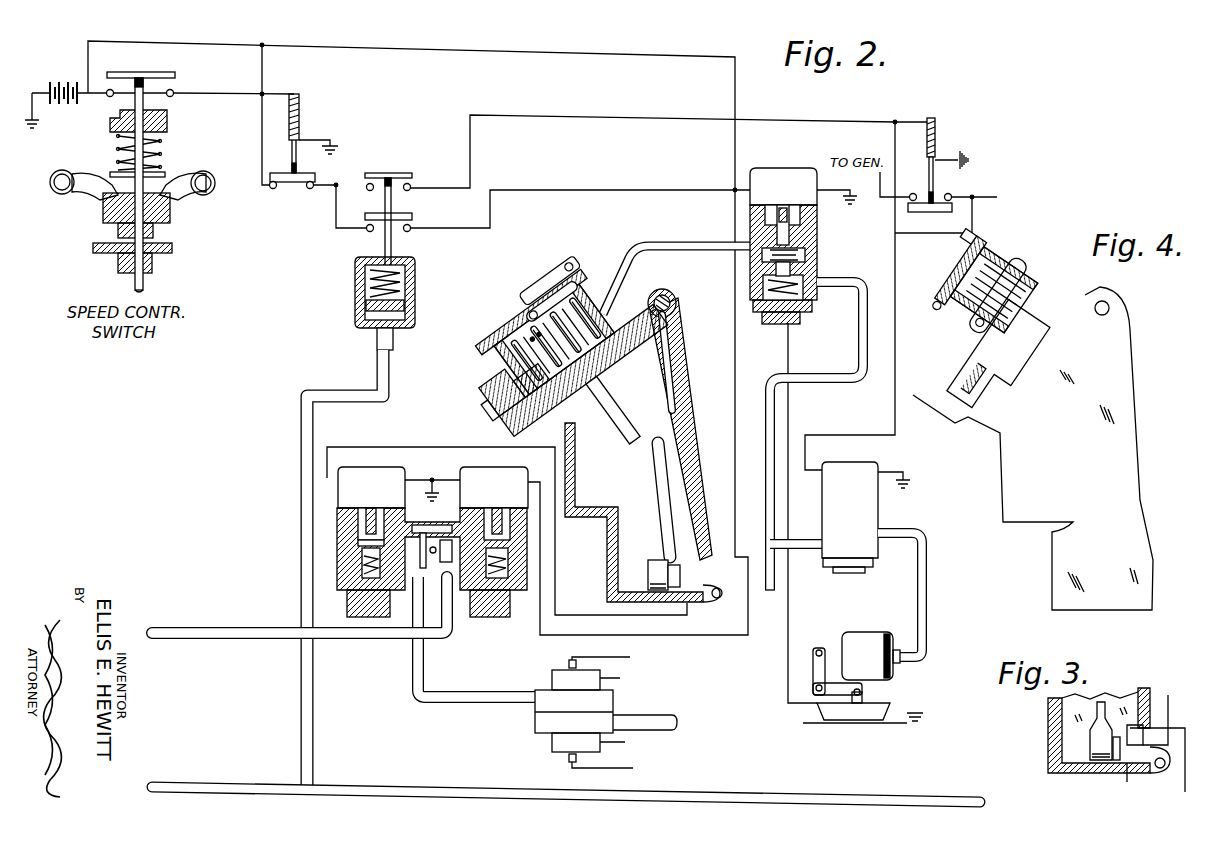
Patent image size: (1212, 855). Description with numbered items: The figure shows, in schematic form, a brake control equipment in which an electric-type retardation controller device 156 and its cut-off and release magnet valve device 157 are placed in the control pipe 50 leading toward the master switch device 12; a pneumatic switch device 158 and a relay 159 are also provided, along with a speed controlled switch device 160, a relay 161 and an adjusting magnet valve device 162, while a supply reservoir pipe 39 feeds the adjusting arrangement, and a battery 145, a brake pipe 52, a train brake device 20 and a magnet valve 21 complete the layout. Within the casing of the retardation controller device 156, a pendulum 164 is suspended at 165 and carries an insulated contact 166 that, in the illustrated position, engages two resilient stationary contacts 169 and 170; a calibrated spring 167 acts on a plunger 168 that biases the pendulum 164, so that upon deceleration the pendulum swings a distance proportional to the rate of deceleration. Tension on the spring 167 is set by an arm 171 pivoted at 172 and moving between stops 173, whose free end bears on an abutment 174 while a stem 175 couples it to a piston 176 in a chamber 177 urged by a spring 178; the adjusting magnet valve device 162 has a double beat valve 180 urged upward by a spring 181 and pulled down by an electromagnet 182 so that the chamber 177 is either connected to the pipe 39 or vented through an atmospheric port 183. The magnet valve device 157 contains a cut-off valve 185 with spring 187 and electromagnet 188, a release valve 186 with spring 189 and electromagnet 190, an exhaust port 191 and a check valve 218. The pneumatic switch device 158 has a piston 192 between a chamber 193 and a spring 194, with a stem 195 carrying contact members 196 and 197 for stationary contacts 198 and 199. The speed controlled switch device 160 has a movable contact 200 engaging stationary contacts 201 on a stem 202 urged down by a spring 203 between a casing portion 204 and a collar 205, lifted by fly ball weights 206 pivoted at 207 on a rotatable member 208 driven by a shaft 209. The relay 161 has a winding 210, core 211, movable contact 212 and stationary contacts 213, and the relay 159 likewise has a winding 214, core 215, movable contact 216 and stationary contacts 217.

In FIG. 2, the master switch device 12 is at (550, 740).
In FIG. 2, the train brake valve 20 is at (872, 722).
In FIG. 2, the train brake magnet valve 21 is at (882, 517).
In FIG. 2, the supply reservoir pipe 39 is at (828, 378).
In FIG. 2, the control pipe 50 is at (415, 652).
In FIG. 2, the pipe 52 is at (252, 790).
In FIG. 2, the battery 145 is at (57, 80).
In FIG. 2, the retardation controller device 156 is at (684, 383).
In FIG. 4, the retardation controller device 156 is at (1105, 405).
In FIG. 3, the retardation controller device 156 is at (1062, 697).
In FIG. 2, the cut-off and release magnet valve device 157 is at (529, 560).
In FIG. 2, the pneumatic switch device 158 is at (410, 300).
In FIG. 2, the relay 159 is at (940, 145).
In FIG. 2, the speed controlled switch device 160 is at (172, 250).
In FIG. 2, the relay 161 is at (300, 106).
In FIG. 2, the adjusting magnet valve device 162 is at (746, 222).
In FIG. 2, the pendulum 164 is at (657, 470).
In FIG. 3, the pendulum 164 is at (1100, 740).
In FIG. 2, the suspension point 165 is at (660, 295).
In FIG. 2, the contact 166 is at (667, 570).
In FIG. 3, the contact 166 is at (1117, 762).
In FIG. 2, the calibrated spring 167 is at (531, 409).
In FIG. 2, the plunger 168 is at (631, 397).
In FIG. 2, the resilient stationary contact 169 is at (690, 555).
In FIG. 3, the resilient stationary contact 169 is at (1130, 718).
In FIG. 2, the resilient stationary contact 170 is at (687, 590).
In FIG. 3, the resilient stationary contact 170 is at (1123, 752).
In FIG. 2, the arm 171 is at (526, 289).
In FIG. 4, the arm 171 is at (969, 352).
In FIG. 2, the pivot 172 is at (552, 259).
In FIG. 4, the pivot 172 is at (961, 286).
In FIG. 2, the stops 173 is at (474, 416).
In FIG. 2, the abutment 174 is at (563, 372).
In FIG. 2, the stem 175 is at (514, 287).
In FIG. 4, the stem 175 is at (960, 251).
In FIG. 2, the piston 176 is at (589, 360).
In FIG. 4, the piston 176 is at (1038, 302).
In FIG. 2, the chamber 177 is at (582, 351).
In FIG. 4, the chamber 177 is at (1038, 295).
In FIG. 2, the spring 178 is at (502, 329).
In FIG. 2, the double beat valve 180 is at (805, 256).
In FIG. 2, the spring 181 is at (778, 322).
In FIG. 2, the electromagnet 182 is at (804, 244).
In FIG. 2, the atmospheric port 183 is at (800, 214).
In FIG. 2, the cut-off valve 185 is at (510, 577).
In FIG. 2, the release valve 186 is at (340, 542).
In FIG. 2, the spring 187 is at (490, 617).
In FIG. 2, the electromagnet 188 is at (487, 467).
In FIG. 2, the spring 189 is at (352, 590).
In FIG. 2, the electromagnet 190 is at (396, 440).
In FIG. 2, the exhaust port 191 is at (340, 568).
In FIG. 2, the piston 192 is at (405, 306).
In FIG. 2, the chamber 193 is at (395, 336).
In FIG. 2, the spring 194 is at (404, 278).
In FIG. 2, the stem 195 is at (384, 243).
In FIG. 2, the contact member 196 is at (400, 215).
In FIG. 2, the contact member 197 is at (392, 175).
In FIG. 2, the stationary contacts 198 is at (400, 232).
In FIG. 2, the stationary contacts 199 is at (388, 182).
In FIG. 2, the movable contact 200 is at (150, 77).
In FIG. 2, the stationary contacts 201 is at (167, 96).
In FIG. 2, the stem 202 is at (160, 145).
In FIG. 2, the spring 203 is at (118, 149).
In FIG. 2, the casing portion 204 is at (165, 118).
In FIG. 2, the collar or washer 205 is at (165, 174).
In FIG. 2, the fly ball weights 206 is at (210, 178).
In FIG. 2, the pivot 207 is at (98, 196).
In FIG. 2, the rotatable member 208 is at (170, 205).
In FIG. 2, the shaft 209 is at (146, 287).
In FIG. 2, the winding or solenoid 210 is at (298, 96).
In FIG. 2, the core 211 is at (299, 128).
In FIG. 2, the movable contact 212 is at (315, 178).
In FIG. 2, the stationary contacts 213 is at (307, 190).
In FIG. 2, the winding or solenoid 214 is at (936, 130).
In FIG. 2, the core 215 is at (970, 168).
In FIG. 2, the movable contact 216 is at (945, 213).
In FIG. 2, the stationary contacts 217 is at (917, 195).
In FIG. 2, the check valve 218 is at (435, 547).